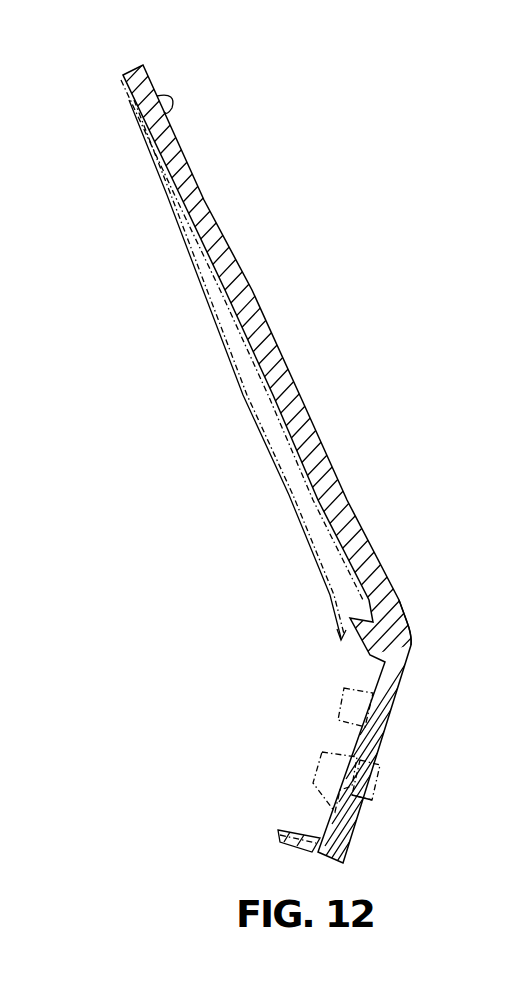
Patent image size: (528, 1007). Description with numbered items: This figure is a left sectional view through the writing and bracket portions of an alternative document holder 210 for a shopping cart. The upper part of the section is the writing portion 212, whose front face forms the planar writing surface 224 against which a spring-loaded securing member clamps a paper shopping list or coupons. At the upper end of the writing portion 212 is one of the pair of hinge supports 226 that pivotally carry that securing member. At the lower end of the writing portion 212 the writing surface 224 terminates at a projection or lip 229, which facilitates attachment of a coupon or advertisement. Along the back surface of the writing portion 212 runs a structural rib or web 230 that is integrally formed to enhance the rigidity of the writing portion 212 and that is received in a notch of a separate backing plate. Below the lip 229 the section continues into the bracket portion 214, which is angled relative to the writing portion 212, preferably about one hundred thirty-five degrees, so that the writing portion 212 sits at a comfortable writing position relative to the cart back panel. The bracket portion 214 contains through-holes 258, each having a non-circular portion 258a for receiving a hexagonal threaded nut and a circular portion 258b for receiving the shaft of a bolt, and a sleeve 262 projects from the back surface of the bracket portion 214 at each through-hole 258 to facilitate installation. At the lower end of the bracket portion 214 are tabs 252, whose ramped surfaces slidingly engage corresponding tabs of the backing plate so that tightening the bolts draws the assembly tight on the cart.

The document holder 210 is at (105, 653).
The writing portion 212 is at (235, 278).
The bracket portion 214 is at (430, 798).
The writing surface 224 is at (288, 368).
The hinge supports 226 is at (178, 100).
The lip 229 is at (411, 620).
The ribs 230 is at (318, 560).
The tabs 252 is at (273, 832).
The through-holes 258 is at (364, 802).
The non-circular portions 258a is at (368, 778).
The circular portions 258b is at (325, 770).
The sleeve 262 is at (352, 683).